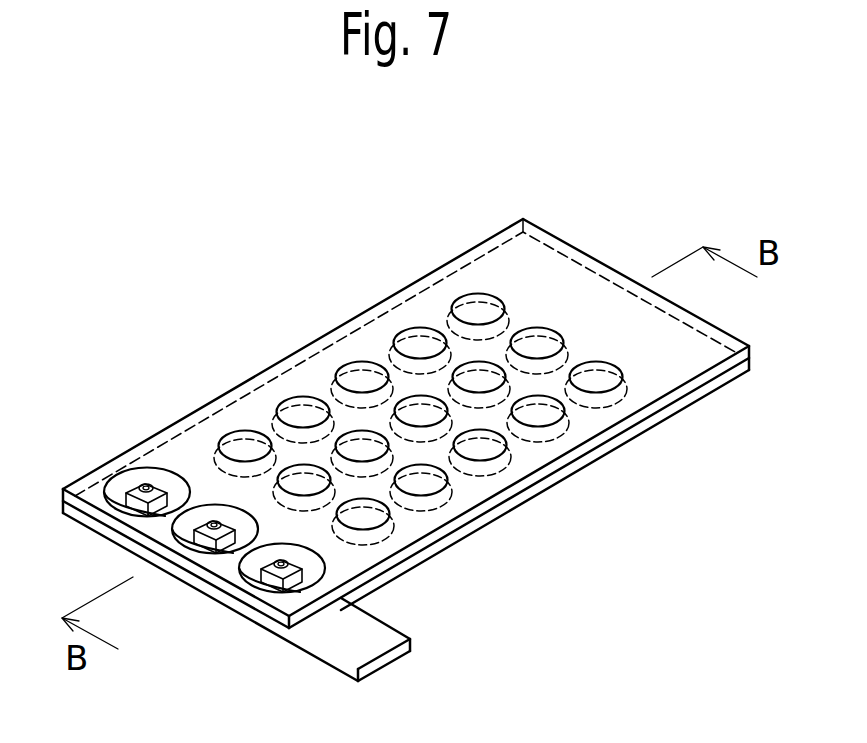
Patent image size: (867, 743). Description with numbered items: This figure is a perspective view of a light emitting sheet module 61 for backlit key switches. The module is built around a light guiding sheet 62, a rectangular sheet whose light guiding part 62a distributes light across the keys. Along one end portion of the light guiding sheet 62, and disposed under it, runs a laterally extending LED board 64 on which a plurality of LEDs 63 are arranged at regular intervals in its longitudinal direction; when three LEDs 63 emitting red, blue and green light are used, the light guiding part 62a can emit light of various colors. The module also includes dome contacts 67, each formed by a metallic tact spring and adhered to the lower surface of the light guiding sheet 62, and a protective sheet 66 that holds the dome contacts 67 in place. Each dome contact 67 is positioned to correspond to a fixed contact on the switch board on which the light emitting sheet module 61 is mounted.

The light emitting sheet module 61 is at (553, 177).
The light guiding sheet 62 is at (420, 258).
The light guiding part 62a is at (307, 352).
The LED 63 is at (112, 503).
The LED board 64 is at (355, 651).
The protective sheet 66 is at (557, 478).
The dome contact 67 is at (240, 428).